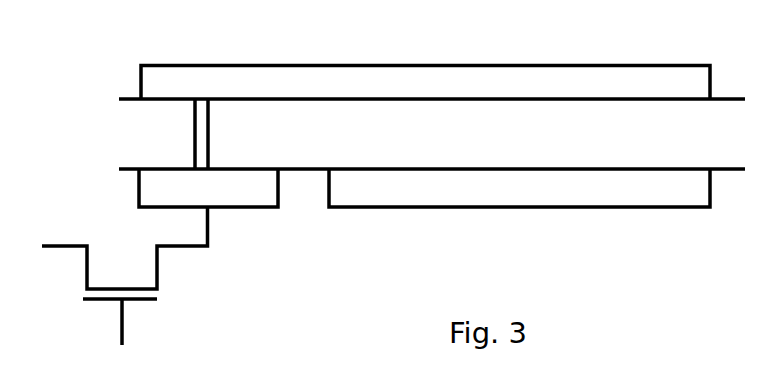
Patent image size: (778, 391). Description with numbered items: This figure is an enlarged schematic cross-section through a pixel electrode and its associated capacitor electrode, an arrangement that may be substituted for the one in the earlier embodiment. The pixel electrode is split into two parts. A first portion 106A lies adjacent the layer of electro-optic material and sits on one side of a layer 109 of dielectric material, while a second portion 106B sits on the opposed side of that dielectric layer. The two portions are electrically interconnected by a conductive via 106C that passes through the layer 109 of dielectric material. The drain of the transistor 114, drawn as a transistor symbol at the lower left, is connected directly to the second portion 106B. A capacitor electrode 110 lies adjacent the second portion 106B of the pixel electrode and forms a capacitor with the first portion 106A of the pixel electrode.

The first portion of pixel electrode 106A is at (425, 83).
The second portion of pixel electrode 106B is at (208, 188).
The conductive via 106C is at (202, 135).
The layer of dielectric material 109 is at (432, 134).
The capacitor electrode 110 is at (519, 188).
The transistor 114 is at (113, 256).